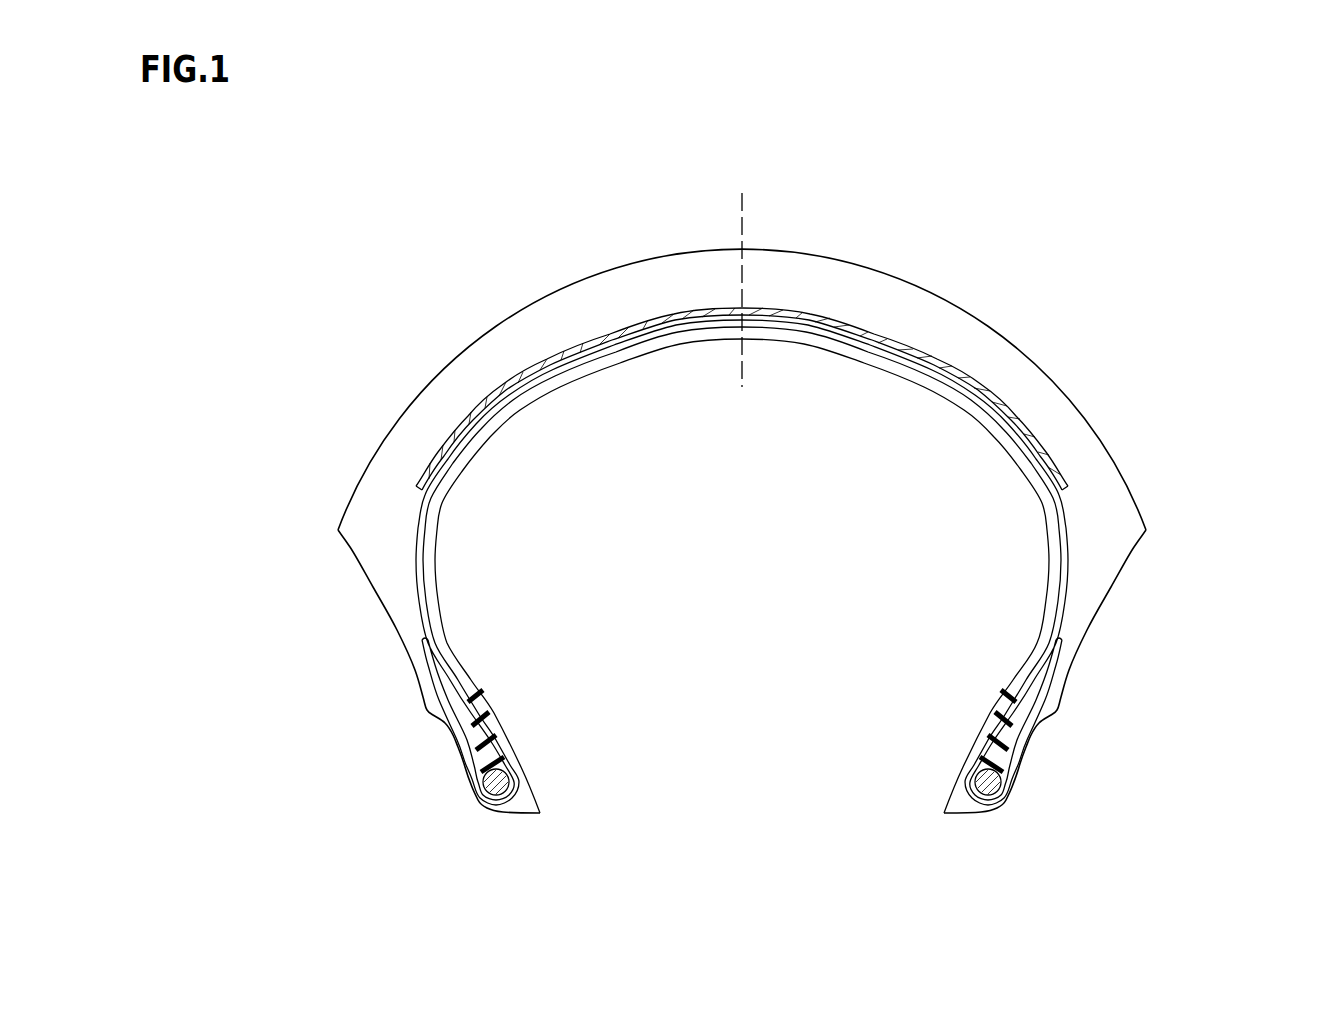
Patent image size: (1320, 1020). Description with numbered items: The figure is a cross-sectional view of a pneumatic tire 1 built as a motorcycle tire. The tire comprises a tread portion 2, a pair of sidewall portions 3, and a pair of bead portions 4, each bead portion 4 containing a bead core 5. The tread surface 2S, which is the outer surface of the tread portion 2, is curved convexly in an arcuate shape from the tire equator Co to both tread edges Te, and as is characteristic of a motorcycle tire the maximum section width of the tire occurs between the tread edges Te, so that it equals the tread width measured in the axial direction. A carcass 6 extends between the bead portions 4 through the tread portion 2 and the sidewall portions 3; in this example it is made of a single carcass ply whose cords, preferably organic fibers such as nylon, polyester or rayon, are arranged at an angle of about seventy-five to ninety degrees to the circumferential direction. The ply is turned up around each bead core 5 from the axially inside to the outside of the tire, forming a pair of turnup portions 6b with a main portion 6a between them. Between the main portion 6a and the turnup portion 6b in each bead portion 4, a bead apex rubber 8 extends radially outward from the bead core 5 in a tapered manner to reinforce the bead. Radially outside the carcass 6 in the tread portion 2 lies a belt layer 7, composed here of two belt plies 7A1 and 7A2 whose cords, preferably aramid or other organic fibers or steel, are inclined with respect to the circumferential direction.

The pneumatic tire 1 is at (1135, 335).
The tread portion 2 is at (930, 293).
The tread surface 2S is at (865, 267).
The sidewall portion 3 is at (1102, 593).
The bead portion 4 is at (925, 745).
The bead core 5 is at (972, 790).
The carcass 6 is at (905, 543).
The main portion 6a is at (1062, 552).
The turnup portion 6b is at (1060, 620).
The belt layer 7 is at (658, 497).
The belt ply 7A1 is at (560, 343).
The belt ply 7A2 is at (560, 343).
The bead apex rubber 8 is at (994, 757).
The tire equator Co is at (741, 276).
The tread edge Te is at (1145, 527).